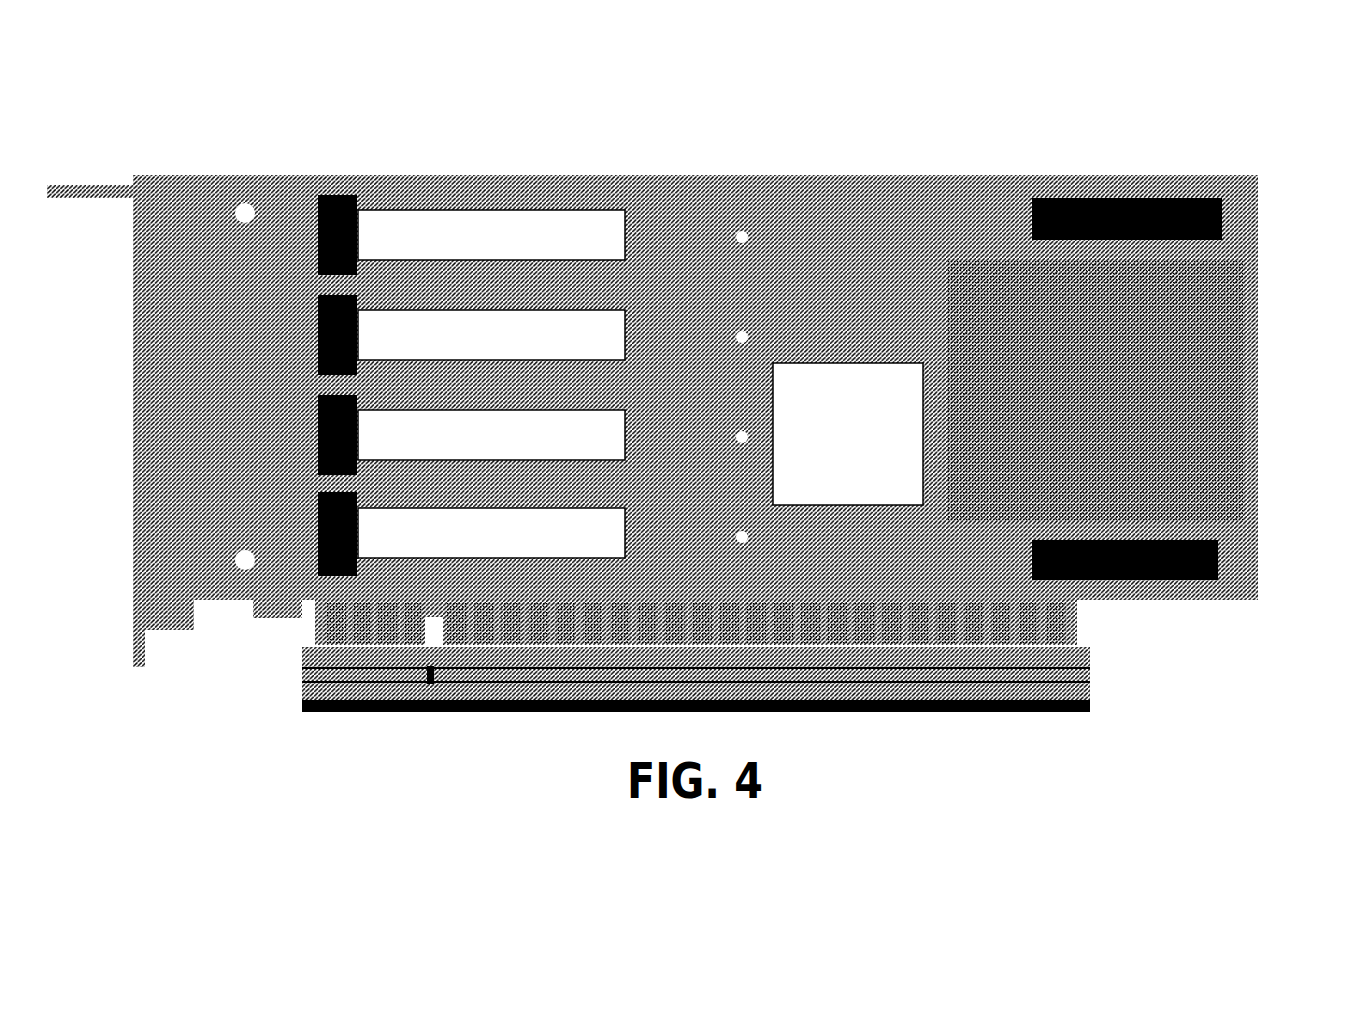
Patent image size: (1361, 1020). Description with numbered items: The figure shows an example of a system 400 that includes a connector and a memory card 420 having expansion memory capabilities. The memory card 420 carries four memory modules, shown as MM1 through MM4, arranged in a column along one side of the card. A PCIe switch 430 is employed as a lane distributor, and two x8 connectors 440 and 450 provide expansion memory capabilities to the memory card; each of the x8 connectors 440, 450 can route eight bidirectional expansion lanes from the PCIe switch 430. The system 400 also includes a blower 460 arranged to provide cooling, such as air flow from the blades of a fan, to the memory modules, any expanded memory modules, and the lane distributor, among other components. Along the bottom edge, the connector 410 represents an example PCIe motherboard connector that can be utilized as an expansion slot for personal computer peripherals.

The system 400 is at (694, 391).
The connector 410 is at (1088, 668).
The memory card 420 is at (820, 173).
The PCIe switch 430 is at (847, 363).
The x8 connector 440 is at (1222, 218).
The x8 connector 450 is at (1220, 560).
The blower 460 is at (1243, 383).